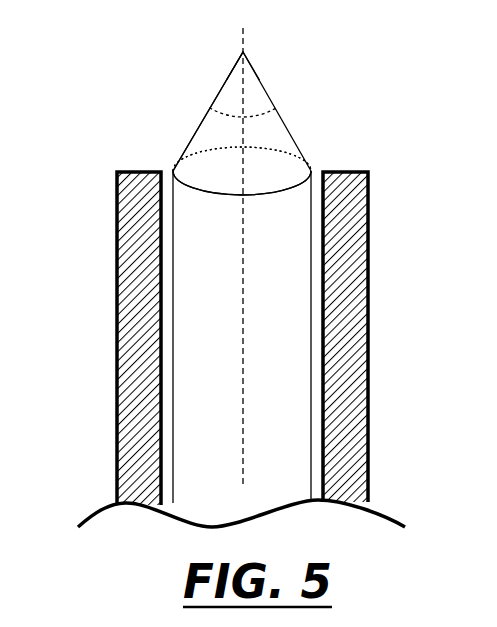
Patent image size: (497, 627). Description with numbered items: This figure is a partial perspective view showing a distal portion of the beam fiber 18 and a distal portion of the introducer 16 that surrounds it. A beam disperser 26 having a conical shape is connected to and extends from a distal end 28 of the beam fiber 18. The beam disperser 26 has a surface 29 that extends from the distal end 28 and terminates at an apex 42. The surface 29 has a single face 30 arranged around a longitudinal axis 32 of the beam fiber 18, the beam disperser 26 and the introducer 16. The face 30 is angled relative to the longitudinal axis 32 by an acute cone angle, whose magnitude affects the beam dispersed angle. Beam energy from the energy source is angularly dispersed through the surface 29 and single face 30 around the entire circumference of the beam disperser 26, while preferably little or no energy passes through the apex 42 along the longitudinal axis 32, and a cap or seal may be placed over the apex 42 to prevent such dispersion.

The introducer 16 is at (140, 372).
The beam fiber 18 is at (290, 322).
The beam disperser 26 is at (212, 87).
The distal end 28 is at (226, 194).
The surface 29 is at (186, 137).
The single face 30 is at (267, 170).
The longitudinal axis 32 is at (243, 422).
The apex 42 is at (243, 52).